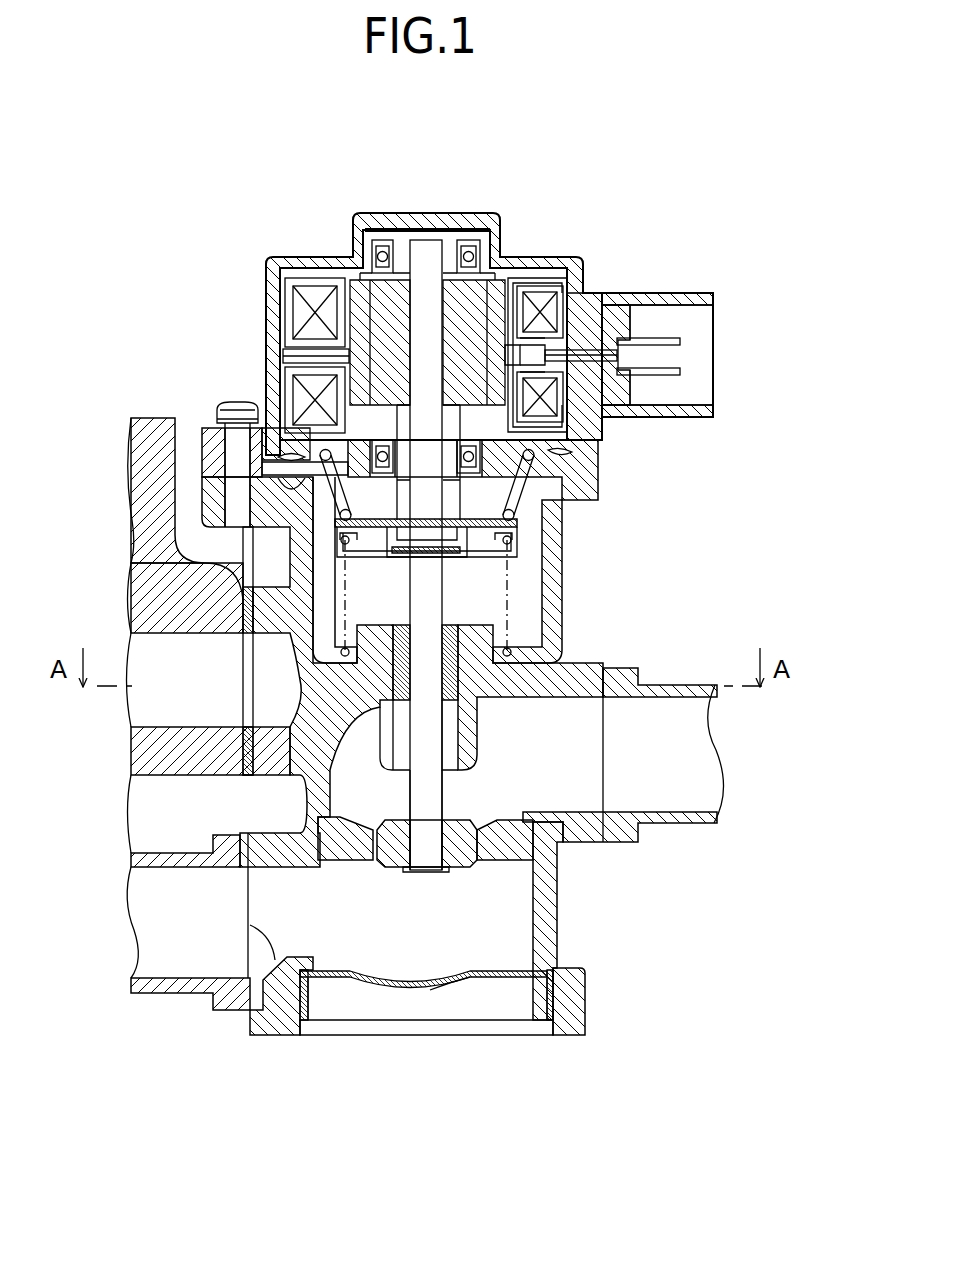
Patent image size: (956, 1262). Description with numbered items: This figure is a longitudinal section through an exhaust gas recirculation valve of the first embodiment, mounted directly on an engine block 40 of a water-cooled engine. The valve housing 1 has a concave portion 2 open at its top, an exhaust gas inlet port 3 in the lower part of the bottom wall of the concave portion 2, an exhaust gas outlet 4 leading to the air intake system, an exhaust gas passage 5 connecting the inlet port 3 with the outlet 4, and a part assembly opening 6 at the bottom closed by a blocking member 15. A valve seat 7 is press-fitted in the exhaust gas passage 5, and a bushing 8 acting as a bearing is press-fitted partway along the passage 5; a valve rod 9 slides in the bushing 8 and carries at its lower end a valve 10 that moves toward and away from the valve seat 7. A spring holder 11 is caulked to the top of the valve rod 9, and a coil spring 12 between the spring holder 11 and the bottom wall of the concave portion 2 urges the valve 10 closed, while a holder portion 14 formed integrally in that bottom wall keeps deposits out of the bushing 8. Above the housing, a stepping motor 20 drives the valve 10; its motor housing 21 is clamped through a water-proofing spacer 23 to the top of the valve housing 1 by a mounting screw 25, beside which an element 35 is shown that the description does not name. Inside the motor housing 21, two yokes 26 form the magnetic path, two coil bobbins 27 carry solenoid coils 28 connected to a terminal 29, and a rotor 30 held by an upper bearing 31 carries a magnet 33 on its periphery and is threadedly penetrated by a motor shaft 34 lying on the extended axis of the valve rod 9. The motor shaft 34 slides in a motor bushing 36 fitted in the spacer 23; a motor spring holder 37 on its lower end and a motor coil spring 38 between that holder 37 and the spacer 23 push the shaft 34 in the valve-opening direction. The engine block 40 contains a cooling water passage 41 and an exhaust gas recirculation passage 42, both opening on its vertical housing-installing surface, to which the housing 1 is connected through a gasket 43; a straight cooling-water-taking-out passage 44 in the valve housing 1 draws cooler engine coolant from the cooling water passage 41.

The valve housing 1 is at (588, 1014).
The concave portion 2 is at (530, 623).
The exhaust gas inlet port 3 is at (268, 1040).
The exhaust gas outlet 4 is at (587, 757).
The exhaust gas passage 5 is at (368, 995).
The part assembly opening 6 is at (420, 1005).
The valve seat 7 is at (495, 850).
The bushing 8 is at (450, 673).
The valve rod 9 is at (430, 803).
The valve 10 is at (458, 868).
The spring holder 11 is at (475, 560).
The coil spring 12 is at (513, 595).
The holder portion 14 is at (467, 755).
The blocking member 15 is at (450, 990).
The stepping motor 20 is at (305, 238).
The motor housing 21 is at (264, 275).
The spacer 23 is at (588, 469).
The mounting screw 25 is at (237, 401).
The yokes 26 is at (514, 300).
The coil bobbins 27 is at (553, 310).
The solenoid coils 28 is at (562, 312).
The terminal 29 is at (650, 340).
The rotor 30 is at (356, 312).
The bearing 31 is at (470, 250).
The magnet 33 is at (357, 340).
The motor shaft 34 is at (428, 248).
The bolt head 35 is at (237, 410).
The motor bushing 36 is at (290, 485).
The motor spring holder 37 is at (518, 521).
The motor coil spring 38 is at (517, 488).
The engine block 40 is at (128, 493).
The cooling water passage 41 is at (148, 702).
The exhaust gas recirculation passage 42 is at (145, 925).
The gasket 43 is at (140, 565).
The cooling-water-taking-out passage 44 is at (240, 703).